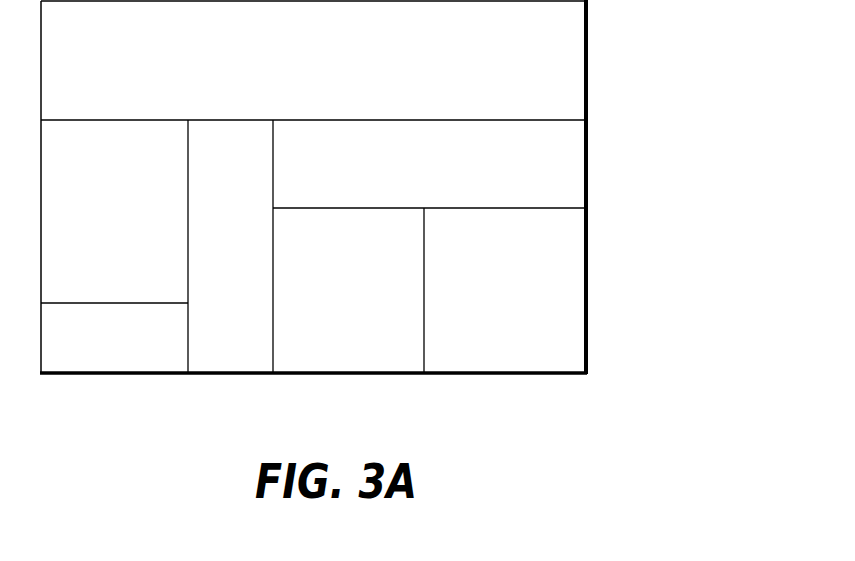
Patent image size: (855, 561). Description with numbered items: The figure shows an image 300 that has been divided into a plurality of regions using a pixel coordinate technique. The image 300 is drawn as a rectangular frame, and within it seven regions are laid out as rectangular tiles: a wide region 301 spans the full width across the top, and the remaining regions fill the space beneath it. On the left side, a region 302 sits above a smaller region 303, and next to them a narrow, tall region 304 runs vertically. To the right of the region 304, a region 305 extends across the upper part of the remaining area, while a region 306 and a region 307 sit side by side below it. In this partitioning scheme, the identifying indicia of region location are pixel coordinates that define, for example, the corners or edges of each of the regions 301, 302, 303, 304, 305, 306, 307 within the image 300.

The image 300 is at (588, 39).
The region 301 is at (157, 65).
The region 302 is at (135, 215).
The region 303 is at (135, 351).
The region 304 is at (250, 196).
The region 305 is at (424, 173).
The region 306 is at (365, 292).
The region 307 is at (523, 292).